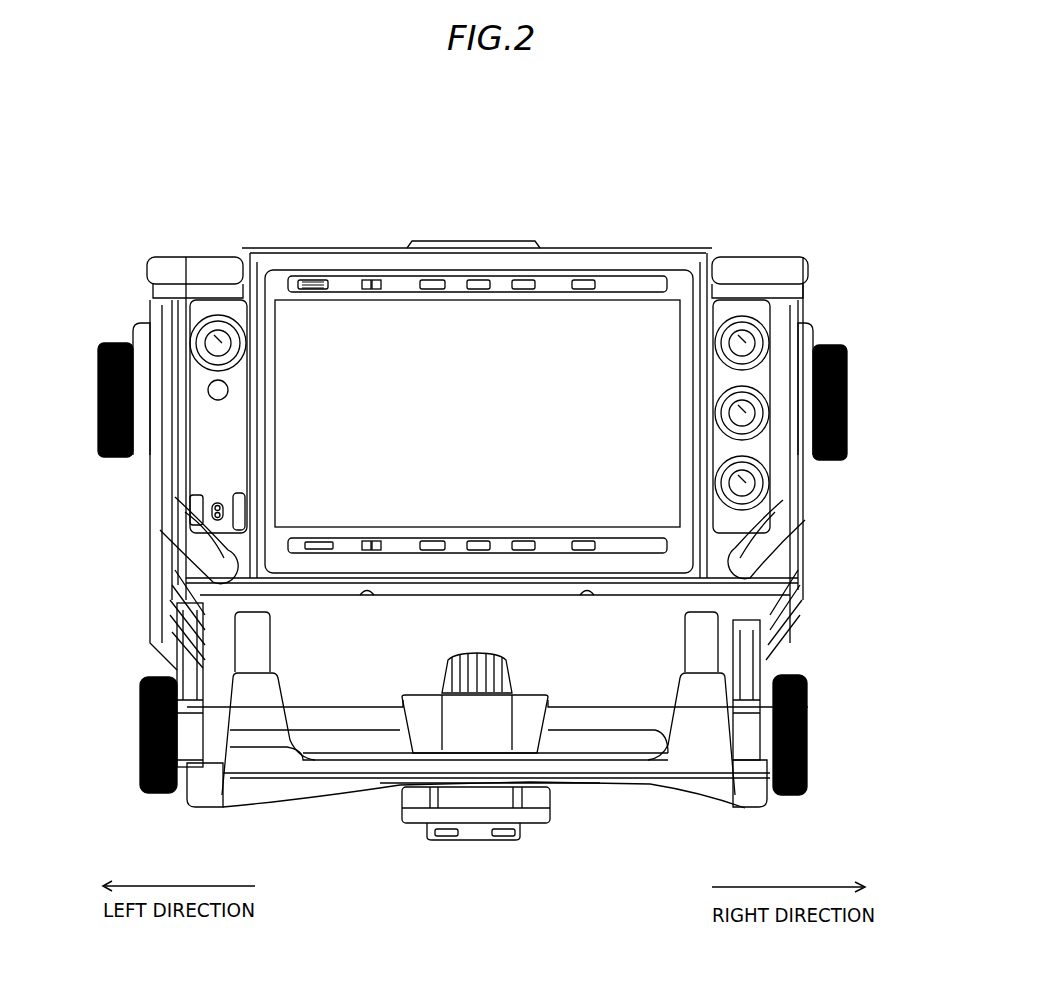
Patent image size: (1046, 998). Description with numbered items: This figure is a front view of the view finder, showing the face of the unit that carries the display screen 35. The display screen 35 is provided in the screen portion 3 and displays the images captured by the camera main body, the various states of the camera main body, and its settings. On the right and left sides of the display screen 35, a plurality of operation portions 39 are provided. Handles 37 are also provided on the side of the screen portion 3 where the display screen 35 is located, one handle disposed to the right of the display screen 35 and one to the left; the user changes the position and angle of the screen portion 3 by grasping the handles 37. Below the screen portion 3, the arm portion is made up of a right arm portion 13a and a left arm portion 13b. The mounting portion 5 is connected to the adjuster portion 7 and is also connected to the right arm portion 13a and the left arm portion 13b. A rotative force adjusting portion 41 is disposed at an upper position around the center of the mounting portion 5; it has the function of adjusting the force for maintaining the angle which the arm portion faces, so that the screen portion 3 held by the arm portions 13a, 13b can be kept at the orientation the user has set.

The screen portion 3 is at (637, 247).
The mounting portion 5 is at (330, 740).
The adjuster portion 7 is at (487, 817).
The right arm portion 13a is at (805, 590).
The left arm portion 13b is at (146, 627).
The display screen 35 is at (354, 350).
The handles 37 is at (167, 350).
The operation portions 39 is at (218, 343).
The rotative force adjusting portion 41 is at (432, 703).